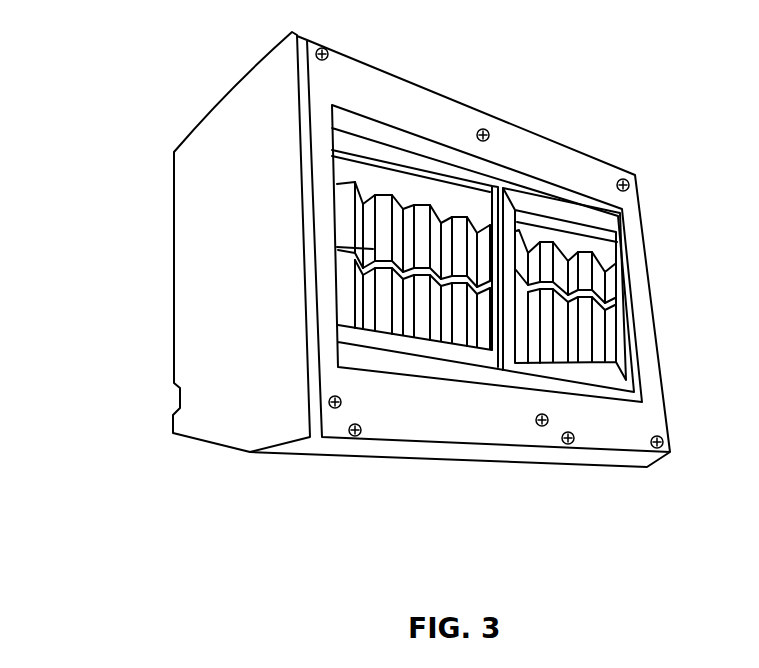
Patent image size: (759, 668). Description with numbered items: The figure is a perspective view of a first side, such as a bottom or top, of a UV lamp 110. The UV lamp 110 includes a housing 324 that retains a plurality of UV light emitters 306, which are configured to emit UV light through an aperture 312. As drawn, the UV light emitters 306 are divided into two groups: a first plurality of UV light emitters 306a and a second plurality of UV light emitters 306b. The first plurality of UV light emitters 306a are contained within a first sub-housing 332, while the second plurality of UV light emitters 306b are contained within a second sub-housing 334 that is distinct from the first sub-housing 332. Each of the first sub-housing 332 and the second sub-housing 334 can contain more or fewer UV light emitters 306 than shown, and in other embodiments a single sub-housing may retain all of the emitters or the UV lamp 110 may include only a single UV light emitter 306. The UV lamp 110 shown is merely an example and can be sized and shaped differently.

The UV lamp 110 is at (380, 269).
The housing 324 is at (222, 89).
The first sub-housing 332 is at (397, 342).
The second sub-housing 334 is at (643, 397).
The aperture 312 is at (530, 206).
The UV light emitters 306 is at (416, 273).
The first plurality of UV light emitters 306a is at (407, 208).
The second plurality of UV light emitters 306b is at (580, 345).